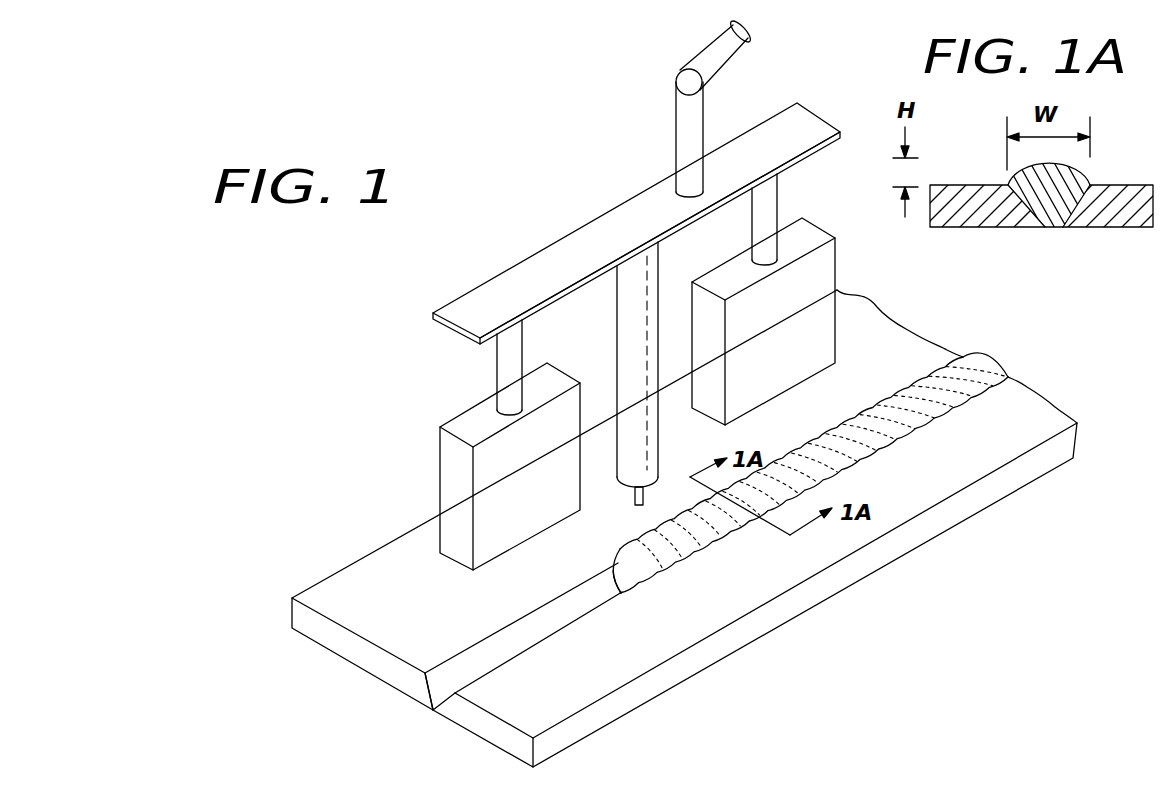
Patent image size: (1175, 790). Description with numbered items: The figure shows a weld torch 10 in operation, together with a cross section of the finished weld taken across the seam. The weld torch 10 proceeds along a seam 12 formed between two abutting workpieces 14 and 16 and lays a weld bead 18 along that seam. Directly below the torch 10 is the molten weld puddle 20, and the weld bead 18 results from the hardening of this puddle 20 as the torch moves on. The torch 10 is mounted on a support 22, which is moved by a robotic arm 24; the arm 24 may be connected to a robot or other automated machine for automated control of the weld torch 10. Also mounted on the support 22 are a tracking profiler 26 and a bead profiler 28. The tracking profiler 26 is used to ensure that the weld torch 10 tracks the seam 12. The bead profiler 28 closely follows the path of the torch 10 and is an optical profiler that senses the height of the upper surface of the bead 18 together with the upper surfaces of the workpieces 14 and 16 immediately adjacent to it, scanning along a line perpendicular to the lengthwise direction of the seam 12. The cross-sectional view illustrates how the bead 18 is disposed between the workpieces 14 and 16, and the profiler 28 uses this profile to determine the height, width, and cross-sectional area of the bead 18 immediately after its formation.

In FIG. 1, the weld torch 10 is at (634, 318).
In FIG. 1, the seam 12 is at (443, 688).
In FIG. 1, the workpiece 14 is at (377, 573).
In FIG. 1A, the workpiece 14 is at (1003, 216).
In FIG. 1, the workpiece 16 is at (702, 655).
In FIG. 1A, the workpiece 16 is at (1133, 217).
In FIG. 1, the weld bead 18 is at (993, 372).
In FIG. 1A, the weld bead 18 is at (1070, 178).
In FIG. 1, the molten weld puddle 20 is at (633, 552).
In FIG. 1, the support 22 is at (647, 210).
In FIG. 1, the robotic arm 24 is at (725, 43).
In FIG. 1, the tracking profiler 26 is at (460, 458).
In FIG. 1, the bead profiler 28 is at (806, 243).